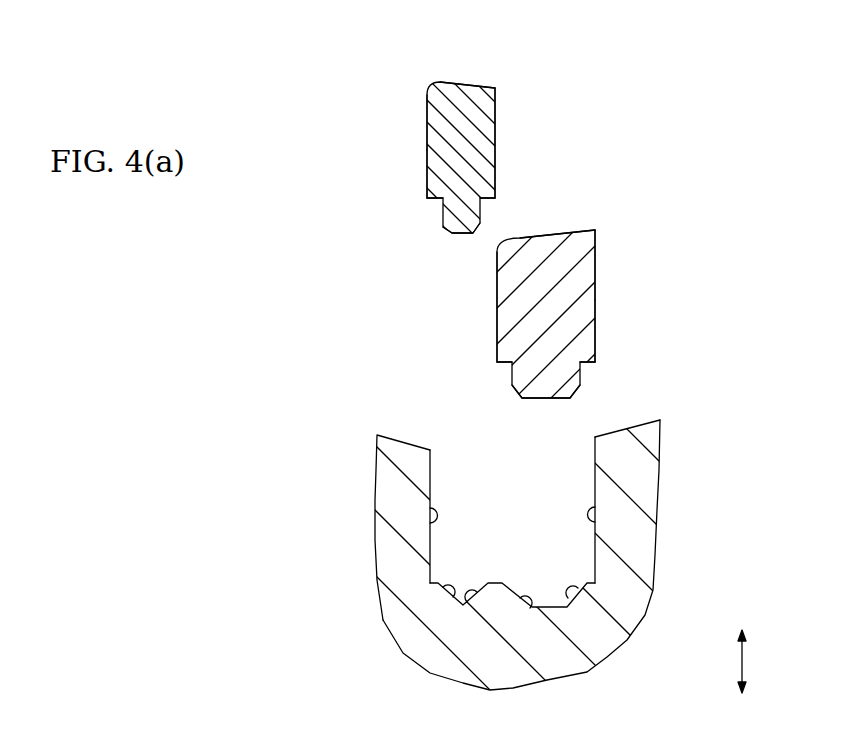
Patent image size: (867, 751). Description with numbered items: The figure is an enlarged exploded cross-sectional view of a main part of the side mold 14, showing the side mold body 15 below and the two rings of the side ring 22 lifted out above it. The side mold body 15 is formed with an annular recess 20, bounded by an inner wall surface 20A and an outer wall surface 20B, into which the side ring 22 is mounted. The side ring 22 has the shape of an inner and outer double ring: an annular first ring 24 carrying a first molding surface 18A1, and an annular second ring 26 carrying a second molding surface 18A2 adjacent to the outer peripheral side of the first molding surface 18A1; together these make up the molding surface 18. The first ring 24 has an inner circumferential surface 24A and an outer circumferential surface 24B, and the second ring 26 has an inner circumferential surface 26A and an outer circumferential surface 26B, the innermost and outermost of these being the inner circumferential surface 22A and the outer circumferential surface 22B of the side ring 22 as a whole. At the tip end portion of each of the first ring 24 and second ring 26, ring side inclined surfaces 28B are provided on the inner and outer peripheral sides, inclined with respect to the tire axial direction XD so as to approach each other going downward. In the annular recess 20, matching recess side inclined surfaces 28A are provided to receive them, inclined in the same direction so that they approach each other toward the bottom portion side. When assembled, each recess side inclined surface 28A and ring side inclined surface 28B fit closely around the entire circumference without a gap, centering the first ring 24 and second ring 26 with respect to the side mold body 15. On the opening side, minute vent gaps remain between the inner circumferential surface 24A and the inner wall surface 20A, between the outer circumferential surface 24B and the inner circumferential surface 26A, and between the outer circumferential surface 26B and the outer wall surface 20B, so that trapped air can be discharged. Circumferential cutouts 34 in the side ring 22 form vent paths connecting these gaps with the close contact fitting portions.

The side mold 14 is at (660, 512).
The side mold body 15 is at (385, 473).
The molding surface 18 is at (643, 422).
The first molding surface 18A1 is at (543, 238).
The second molding surface 18A2 is at (490, 86).
The annular recess 20 is at (460, 470).
The inner wall surface 20A is at (595, 522).
The outer wall surface 20B is at (430, 520).
The side ring 22 is at (530, 231).
The inner circumferential surface 22A is at (597, 295).
The outer circumferential surface 22B is at (427, 133).
The first ring 24 is at (585, 240).
The inner circumferential surface of the first ring 24A is at (597, 335).
The outer circumferential surface of the first ring 24B is at (497, 335).
The second ring 26 is at (450, 92).
The inner circumferential surface of the second ring 26A is at (495, 133).
The outer circumferential surface of the second ring 26B is at (427, 172).
The recess side inclined surface 28A is at (455, 598).
The ring side inclined surface 28B is at (583, 410).
The cutout 34 is at (436, 202).
The tire axial direction XD is at (763, 661).